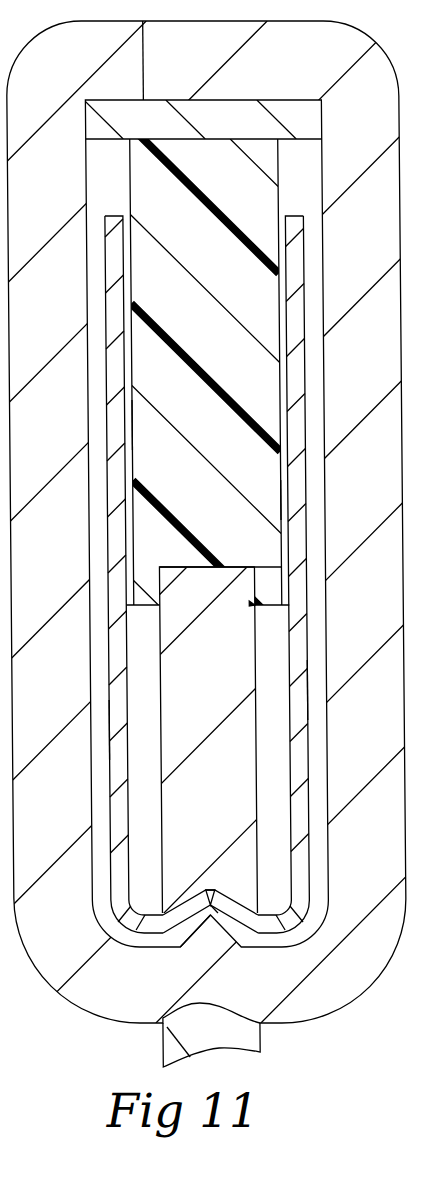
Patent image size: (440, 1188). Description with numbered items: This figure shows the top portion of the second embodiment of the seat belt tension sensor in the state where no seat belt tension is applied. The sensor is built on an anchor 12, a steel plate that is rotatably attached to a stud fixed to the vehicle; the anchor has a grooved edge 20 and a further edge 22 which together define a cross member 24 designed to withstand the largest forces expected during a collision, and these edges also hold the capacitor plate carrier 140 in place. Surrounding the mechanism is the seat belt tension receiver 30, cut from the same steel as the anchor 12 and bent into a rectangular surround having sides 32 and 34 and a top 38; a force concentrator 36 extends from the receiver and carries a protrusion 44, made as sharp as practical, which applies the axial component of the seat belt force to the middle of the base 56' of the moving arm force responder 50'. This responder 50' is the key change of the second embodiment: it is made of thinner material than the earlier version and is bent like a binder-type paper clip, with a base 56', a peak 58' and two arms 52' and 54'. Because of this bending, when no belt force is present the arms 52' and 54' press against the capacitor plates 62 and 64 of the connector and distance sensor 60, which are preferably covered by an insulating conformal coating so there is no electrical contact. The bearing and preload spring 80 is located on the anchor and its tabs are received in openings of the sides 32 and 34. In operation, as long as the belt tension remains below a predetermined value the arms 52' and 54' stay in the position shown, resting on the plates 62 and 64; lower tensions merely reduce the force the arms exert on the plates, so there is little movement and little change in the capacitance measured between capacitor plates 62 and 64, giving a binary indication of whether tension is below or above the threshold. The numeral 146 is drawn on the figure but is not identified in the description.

The anchor 12 is at (182, 1045).
The grooved edge 20 is at (222, 930).
The edge 22 is at (241, 563).
The cross member 24 is at (188, 802).
The seat belt tension receiver 30 is at (359, 997).
The side 32 is at (37, 700).
The side 34 is at (340, 633).
The force concentrator 36 is at (195, 992).
The top 38 is at (176, 52).
The protrusion 44 is at (194, 907).
The moving arm force responder 50' is at (238, 587).
The arm 52' is at (71, 753).
The arm 54' is at (347, 710).
The base 56' is at (157, 953).
The peak 58' is at (232, 887).
The connector and distance sensor 60 is at (217, 193).
The capacitor plate 62 is at (127, 426).
The capacitor plate 64 is at (274, 512).
The bearing and preload spring 80 is at (202, 133).
The capacitor plate carrier 140 is at (138, 308).
The bore 146 is at (185, 567).